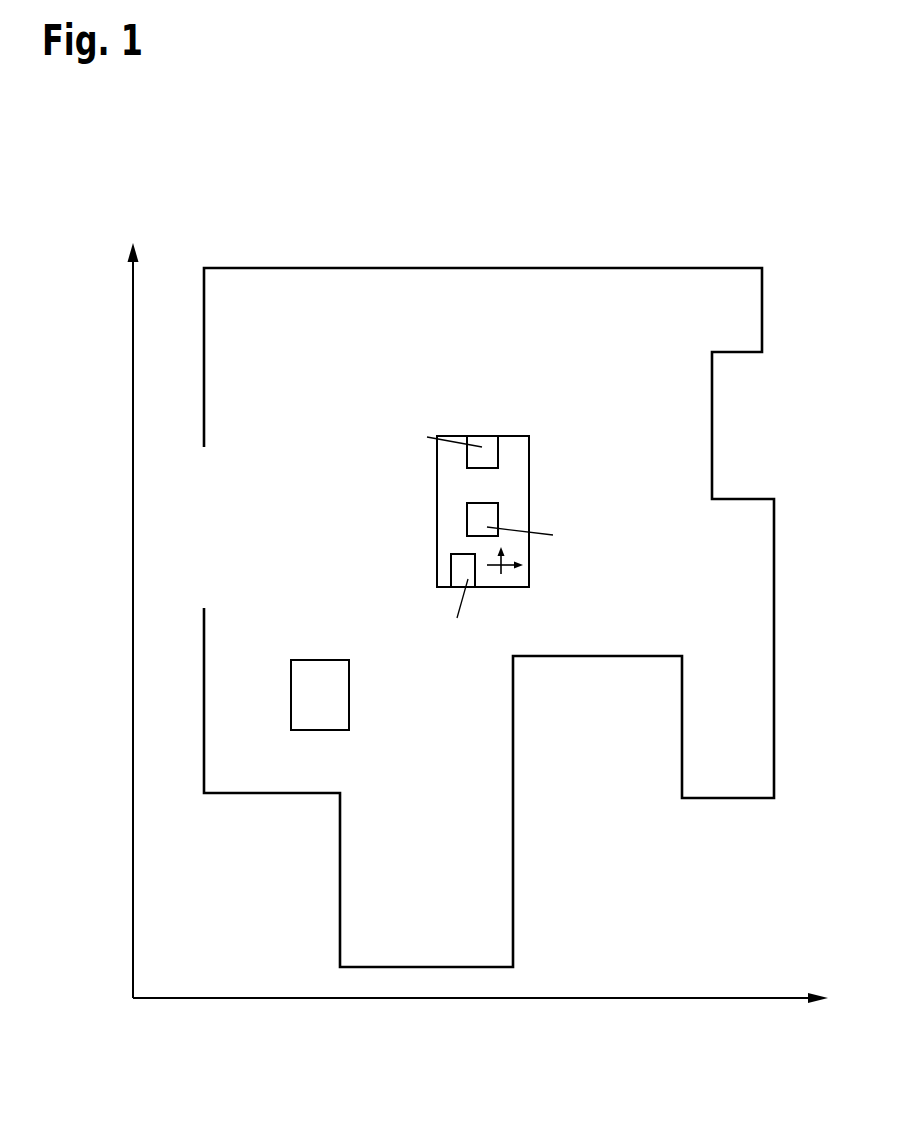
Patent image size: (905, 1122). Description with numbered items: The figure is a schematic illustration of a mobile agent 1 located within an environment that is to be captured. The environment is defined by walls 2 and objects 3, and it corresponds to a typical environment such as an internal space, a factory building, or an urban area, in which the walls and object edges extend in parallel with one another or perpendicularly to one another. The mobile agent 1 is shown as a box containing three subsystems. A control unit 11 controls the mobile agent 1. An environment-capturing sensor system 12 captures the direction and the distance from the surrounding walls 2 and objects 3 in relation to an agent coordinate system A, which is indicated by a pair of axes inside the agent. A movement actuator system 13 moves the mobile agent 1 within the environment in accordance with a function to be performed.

The mobile agent 1 is at (512, 435).
The walls 2 is at (483, 267).
The objects 3 is at (318, 659).
The control unit 11 is at (500, 520).
The environment-capturing sensor system 12 is at (500, 455).
The movement actuator system 13 is at (451, 567).
The agent coordinate system A is at (503, 577).